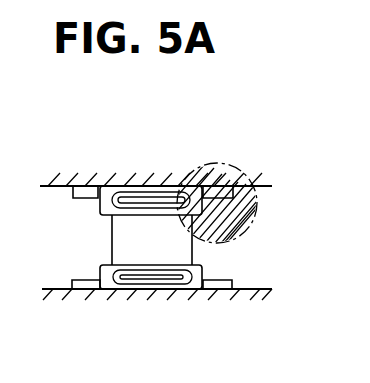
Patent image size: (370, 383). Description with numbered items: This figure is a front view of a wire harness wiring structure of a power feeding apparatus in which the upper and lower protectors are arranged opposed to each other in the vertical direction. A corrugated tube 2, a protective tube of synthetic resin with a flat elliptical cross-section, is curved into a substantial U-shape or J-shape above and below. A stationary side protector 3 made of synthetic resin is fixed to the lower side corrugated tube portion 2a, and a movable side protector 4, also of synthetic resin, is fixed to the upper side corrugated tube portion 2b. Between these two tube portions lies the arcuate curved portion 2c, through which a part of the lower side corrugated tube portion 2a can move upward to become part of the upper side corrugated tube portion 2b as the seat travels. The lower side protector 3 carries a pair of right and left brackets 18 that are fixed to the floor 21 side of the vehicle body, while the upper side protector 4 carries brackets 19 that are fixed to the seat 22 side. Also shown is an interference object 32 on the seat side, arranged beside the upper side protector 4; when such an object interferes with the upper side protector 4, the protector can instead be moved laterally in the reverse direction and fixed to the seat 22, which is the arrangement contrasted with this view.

The corrugated tube 2 is at (155, 234).
The lower side corrugated tube portion 2a is at (152, 284).
The upper side corrugated tube portion 2b is at (152, 188).
The arcuate curved portion 2c is at (162, 247).
The stationary side protector 3 is at (127, 296).
The movable side protector 4 is at (118, 182).
The bracket 18 is at (72, 290).
The bracket 19 is at (75, 186).
The floor 21 is at (238, 290).
The seat 22 is at (268, 187).
The interference object 32 is at (228, 173).